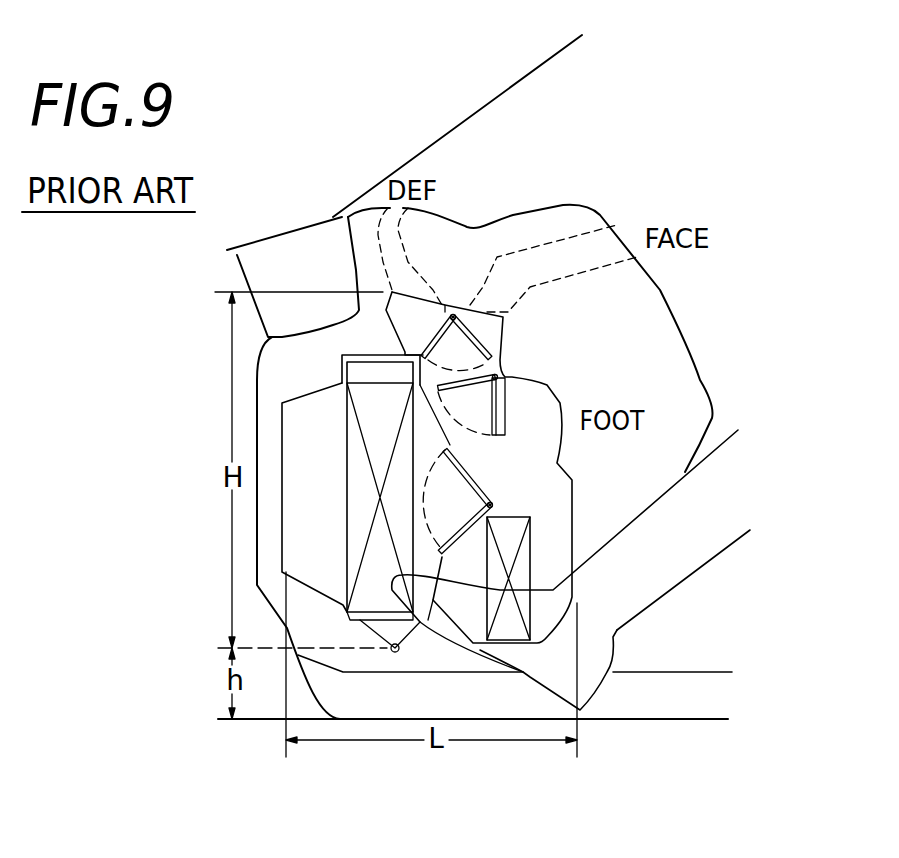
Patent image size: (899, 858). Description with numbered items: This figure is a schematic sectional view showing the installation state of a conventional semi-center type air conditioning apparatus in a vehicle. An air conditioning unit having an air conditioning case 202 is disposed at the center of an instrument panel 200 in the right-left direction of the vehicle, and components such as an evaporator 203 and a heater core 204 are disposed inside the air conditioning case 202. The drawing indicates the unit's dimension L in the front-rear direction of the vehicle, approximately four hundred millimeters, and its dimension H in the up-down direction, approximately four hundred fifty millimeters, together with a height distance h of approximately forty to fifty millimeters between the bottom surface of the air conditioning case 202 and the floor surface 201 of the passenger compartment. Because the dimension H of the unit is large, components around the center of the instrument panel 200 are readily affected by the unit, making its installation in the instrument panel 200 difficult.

The instrument panel 200 is at (568, 203).
The floor surface 201 is at (633, 720).
The air conditioning case 202 is at (573, 527).
The evaporator 203 is at (365, 598).
The heater core 204 is at (503, 630).